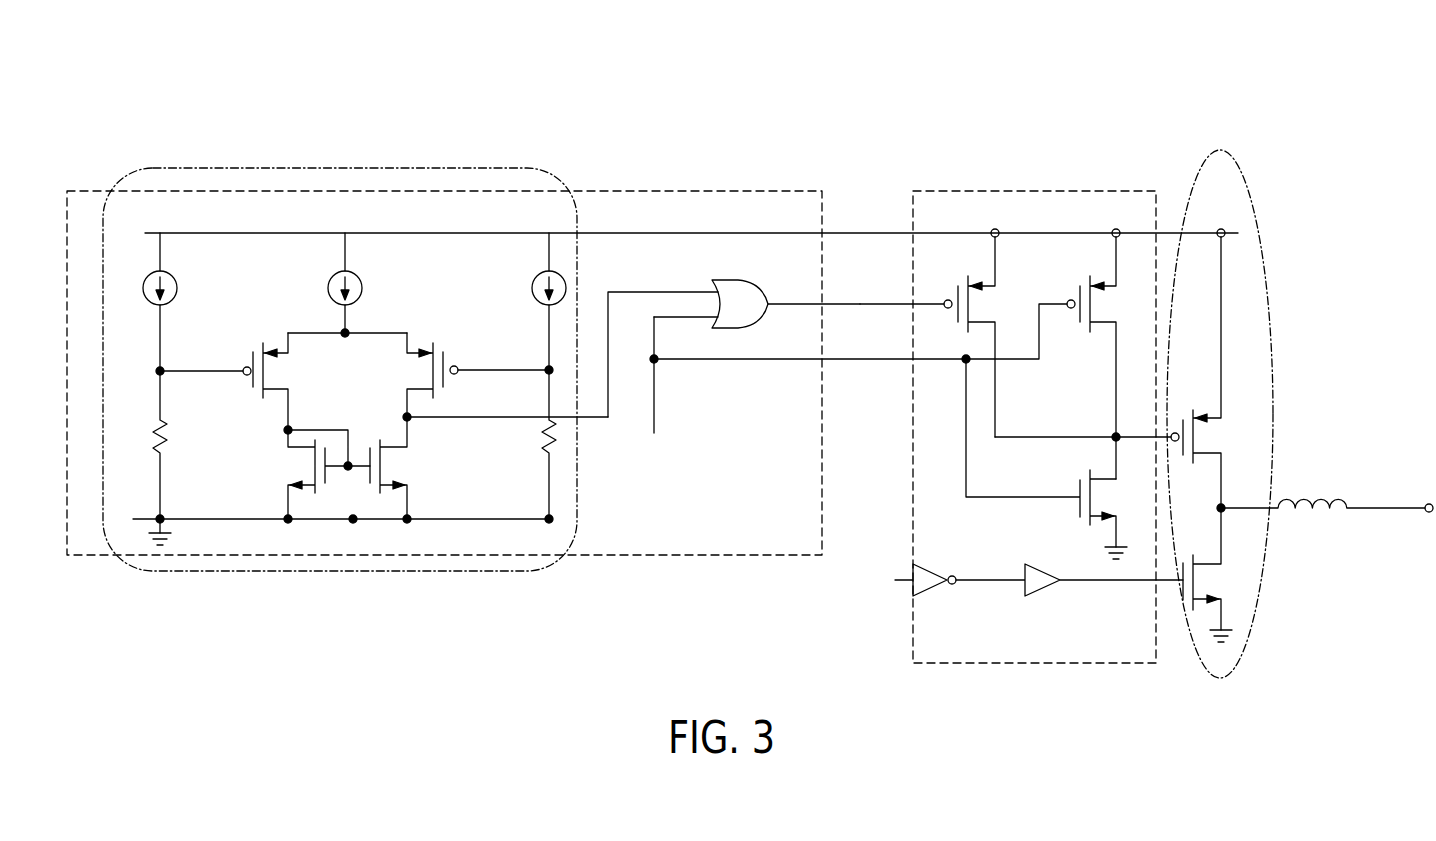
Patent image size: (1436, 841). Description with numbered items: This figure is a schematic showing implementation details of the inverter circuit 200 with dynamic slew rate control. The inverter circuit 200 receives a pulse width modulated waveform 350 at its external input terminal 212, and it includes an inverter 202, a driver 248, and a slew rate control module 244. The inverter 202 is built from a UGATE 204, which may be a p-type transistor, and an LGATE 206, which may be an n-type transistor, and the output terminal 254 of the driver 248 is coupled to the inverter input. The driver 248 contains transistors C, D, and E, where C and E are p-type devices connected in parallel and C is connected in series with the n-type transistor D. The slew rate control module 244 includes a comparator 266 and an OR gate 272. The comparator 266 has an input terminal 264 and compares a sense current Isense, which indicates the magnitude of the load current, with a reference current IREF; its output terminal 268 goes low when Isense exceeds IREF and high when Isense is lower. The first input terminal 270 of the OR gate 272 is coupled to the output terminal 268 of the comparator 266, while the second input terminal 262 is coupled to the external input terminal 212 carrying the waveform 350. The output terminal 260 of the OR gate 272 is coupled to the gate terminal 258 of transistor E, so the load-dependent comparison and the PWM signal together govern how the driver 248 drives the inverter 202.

The inverter circuit 200 is at (228, 98).
The inverter 202 is at (1205, 158).
The UGATE 204 is at (1268, 440).
The LGATE 206 is at (1260, 583).
The external input terminal 212 is at (654, 422).
The slew rate control module 244 is at (607, 191).
The driver 248 is at (945, 191).
The output terminal of the driver 254 is at (1120, 433).
The second input terminal of the driver 258 is at (900, 300).
The output terminal of the OR gate 260 is at (834, 300).
The second input terminal of the OR gate 262 is at (700, 319).
The input terminal of the comparator 264 is at (161, 260).
The comparator 266 is at (345, 167).
The output terminal of the comparator 268 is at (457, 420).
The first input terminal of the OR gate 270 is at (712, 290).
The OR gate 272 is at (750, 290).
The pulse width modulated (PWM) waveform 350 is at (678, 455).